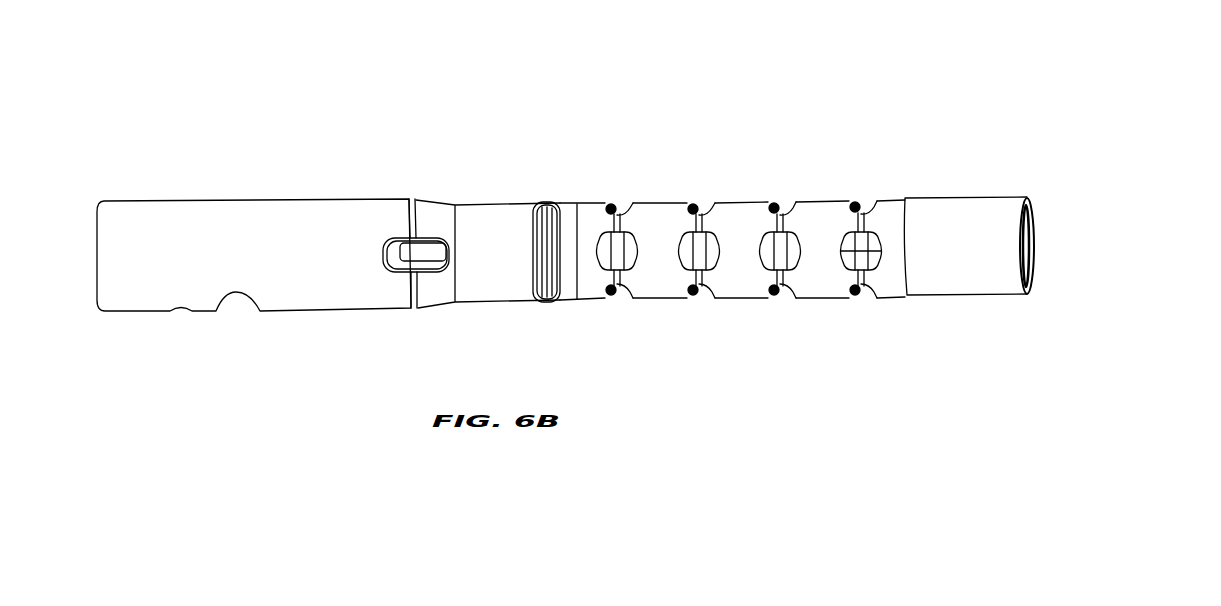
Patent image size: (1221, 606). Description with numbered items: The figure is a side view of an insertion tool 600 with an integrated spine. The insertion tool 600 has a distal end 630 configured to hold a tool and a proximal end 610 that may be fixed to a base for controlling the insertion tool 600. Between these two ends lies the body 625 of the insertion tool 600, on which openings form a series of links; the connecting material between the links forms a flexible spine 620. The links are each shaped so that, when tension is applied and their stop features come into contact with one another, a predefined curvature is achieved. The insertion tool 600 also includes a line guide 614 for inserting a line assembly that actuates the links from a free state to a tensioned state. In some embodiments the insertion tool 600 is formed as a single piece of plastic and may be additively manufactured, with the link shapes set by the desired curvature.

The insertion tool 600 is at (978, 68).
The proximal end 610 is at (982, 198).
The line guide 614 is at (548, 201).
The flexible spine 620 is at (630, 203).
The body 625 is at (735, 275).
The distal end 630 is at (140, 201).